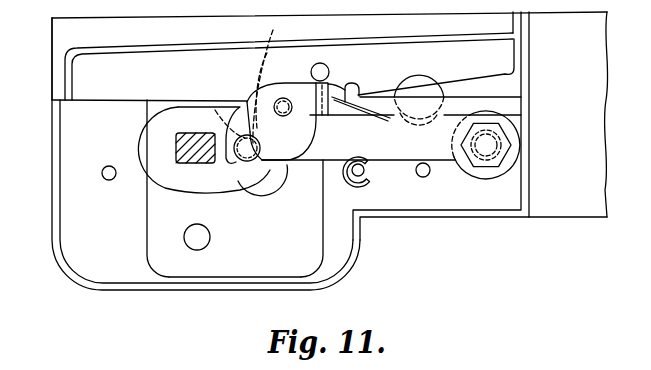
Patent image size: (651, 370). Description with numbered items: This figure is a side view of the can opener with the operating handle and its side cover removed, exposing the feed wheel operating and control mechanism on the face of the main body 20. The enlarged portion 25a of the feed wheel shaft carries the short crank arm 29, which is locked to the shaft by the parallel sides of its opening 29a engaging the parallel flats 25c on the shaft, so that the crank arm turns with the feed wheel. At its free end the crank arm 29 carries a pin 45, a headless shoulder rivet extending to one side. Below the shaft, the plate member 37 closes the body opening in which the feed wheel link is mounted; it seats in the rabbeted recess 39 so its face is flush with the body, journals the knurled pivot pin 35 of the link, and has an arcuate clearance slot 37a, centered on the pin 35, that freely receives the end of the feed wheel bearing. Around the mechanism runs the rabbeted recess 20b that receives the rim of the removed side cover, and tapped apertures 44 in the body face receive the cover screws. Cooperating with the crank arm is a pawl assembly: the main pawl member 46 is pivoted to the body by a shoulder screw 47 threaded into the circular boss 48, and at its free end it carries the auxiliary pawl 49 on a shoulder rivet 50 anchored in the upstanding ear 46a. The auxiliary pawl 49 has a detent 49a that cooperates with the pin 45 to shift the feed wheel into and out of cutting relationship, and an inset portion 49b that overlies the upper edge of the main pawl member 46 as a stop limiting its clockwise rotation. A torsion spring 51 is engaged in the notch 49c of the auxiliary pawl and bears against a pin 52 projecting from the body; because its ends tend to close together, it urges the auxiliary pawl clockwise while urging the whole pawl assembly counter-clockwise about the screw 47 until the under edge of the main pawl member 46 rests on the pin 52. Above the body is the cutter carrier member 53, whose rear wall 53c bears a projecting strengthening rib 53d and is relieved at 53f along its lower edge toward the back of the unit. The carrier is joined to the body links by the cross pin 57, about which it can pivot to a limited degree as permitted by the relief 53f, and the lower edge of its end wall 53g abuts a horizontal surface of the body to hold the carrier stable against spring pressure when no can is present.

The main body 20 is at (550, 218).
The rabbeted recess 20b is at (417, 213).
The enlarged portion of feed wheel shaft 25a is at (175, 183).
The parallel flats 25c is at (247, 172).
The crank arm 29 is at (212, 172).
The opening in crank arm 29a is at (197, 133).
The pivot pin 35 is at (210, 237).
The plate member 37 is at (307, 252).
The arcuate clearance slot 37a is at (260, 194).
The rabbeted recess 39 is at (258, 275).
The tapped apertures 44 is at (109, 180).
The pin 45 is at (263, 140).
The main pawl member 46 is at (331, 150).
The upstanding ear 46a is at (270, 72).
The shoulder screw 47 is at (510, 153).
The circular boss 48 is at (468, 111).
The auxiliary pawl 49 is at (248, 102).
The detent 49a is at (220, 107).
The inset portion 49b is at (332, 118).
The notch 49c is at (347, 86).
The shoulder rivet 50 is at (287, 97).
The torsion spring 51 is at (430, 77).
The pin 52 is at (362, 168).
The cutter carrier member 53 is at (210, 13).
The rear wall 53c is at (117, 82).
The strengthening rib 53d is at (114, 47).
The relieved portion 53f is at (510, 77).
The end wall 53g is at (52, 57).
The cross pin 57 is at (328, 68).